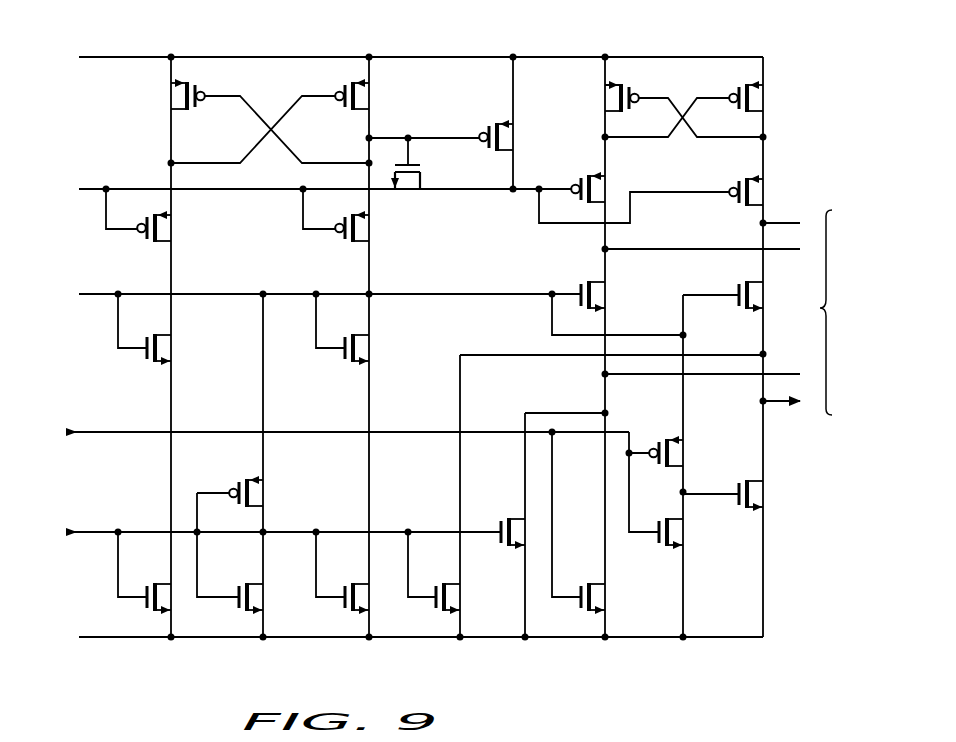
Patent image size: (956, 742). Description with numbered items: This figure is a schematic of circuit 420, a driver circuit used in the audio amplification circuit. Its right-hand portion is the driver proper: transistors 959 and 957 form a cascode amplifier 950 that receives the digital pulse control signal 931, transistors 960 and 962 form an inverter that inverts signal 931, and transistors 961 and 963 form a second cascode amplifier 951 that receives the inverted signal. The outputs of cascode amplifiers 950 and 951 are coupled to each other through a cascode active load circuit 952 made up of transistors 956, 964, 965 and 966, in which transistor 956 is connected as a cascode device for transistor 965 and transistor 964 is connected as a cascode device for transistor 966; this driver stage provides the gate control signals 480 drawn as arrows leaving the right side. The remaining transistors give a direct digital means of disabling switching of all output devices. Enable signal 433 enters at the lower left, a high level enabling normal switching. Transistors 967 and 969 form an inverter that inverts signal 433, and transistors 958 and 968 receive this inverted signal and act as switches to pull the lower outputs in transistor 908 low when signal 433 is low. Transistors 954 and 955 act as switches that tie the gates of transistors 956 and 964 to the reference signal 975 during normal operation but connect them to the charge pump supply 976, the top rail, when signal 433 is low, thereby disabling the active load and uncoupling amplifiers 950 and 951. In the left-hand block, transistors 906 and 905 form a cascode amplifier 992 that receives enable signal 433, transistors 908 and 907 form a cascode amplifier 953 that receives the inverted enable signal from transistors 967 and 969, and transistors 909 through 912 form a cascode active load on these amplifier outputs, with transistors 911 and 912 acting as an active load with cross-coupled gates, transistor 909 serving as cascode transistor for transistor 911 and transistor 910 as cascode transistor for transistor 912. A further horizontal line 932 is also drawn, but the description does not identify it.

The charge pump supply 976 is at (93, 54).
The reference signal 975 is at (105, 188).
The bias line 932 is at (103, 292).
The digital pulse control signal 931 is at (130, 431).
The enable signal 433 is at (74, 531).
The transistor 911 is at (177, 98).
The transistor 912 is at (363, 99).
The transistor 965 is at (630, 84).
The transistor 966 is at (757, 99).
The cascode active load circuit 952 is at (598, 101).
The transistor 955 is at (507, 138).
The transistor 954 is at (428, 178).
The transistor 956 is at (604, 192).
The transistor 964 is at (757, 193).
The transistor 909 is at (165, 230).
The transistor 910 is at (363, 230).
The transistor 905 is at (165, 349).
The transistor 907 is at (363, 349).
The transistor 957 is at (601, 293).
The cascode amplifier 950 is at (563, 280).
The transistor 963 is at (751, 291).
The gate control signals 480 is at (739, 312).
The cascode amplifier 992 is at (81, 378).
The transistor 969 is at (257, 494).
The transistor 962 is at (677, 454).
The transistor 961 is at (759, 488).
The cascode amplifier 951 is at (777, 510).
The transistor 960 is at (671, 527).
The transistor 958 is at (524, 500).
The transistor 906 is at (142, 605).
The transistor 967 is at (258, 591).
The transistor 908 is at (363, 592).
The transistor 968 is at (455, 591).
The transistor 959 is at (600, 592).
The cascode amplifier 953 is at (439, 650).
The circuit 420 is at (582, 690).